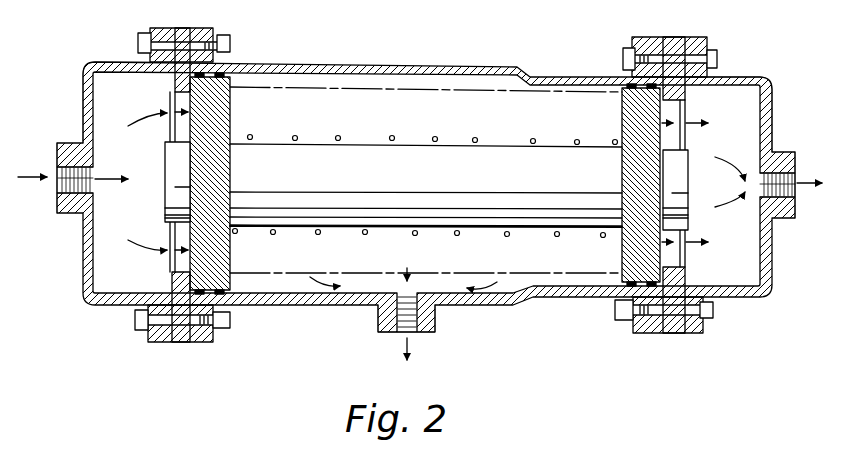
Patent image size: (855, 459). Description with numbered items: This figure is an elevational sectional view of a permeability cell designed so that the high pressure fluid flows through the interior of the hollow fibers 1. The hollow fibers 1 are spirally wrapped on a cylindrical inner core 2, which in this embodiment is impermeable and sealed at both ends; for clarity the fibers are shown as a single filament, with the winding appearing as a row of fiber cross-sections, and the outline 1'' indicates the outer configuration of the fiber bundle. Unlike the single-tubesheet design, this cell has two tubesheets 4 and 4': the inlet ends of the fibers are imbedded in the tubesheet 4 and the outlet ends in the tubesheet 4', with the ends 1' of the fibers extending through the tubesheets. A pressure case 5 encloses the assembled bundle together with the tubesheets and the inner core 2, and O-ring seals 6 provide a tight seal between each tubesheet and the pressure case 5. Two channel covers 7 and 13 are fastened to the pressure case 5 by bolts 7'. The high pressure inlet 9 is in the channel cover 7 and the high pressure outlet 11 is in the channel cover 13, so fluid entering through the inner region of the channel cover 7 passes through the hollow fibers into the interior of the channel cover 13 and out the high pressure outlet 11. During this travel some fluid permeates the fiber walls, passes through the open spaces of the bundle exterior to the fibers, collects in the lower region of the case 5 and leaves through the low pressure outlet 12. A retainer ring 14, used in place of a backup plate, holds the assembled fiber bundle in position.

The hollow fibers 1 is at (425, 187).
The ends of the fibers 1' is at (432, 164).
The outline of the bundle of fibers 1'' is at (426, 180).
The inner core 2 is at (368, 144).
The tubesheet 4 is at (226, 183).
The tubesheet 4' is at (621, 185).
The pressure case 5 is at (404, 70).
The O-ring seals 6 is at (218, 73).
The channel cover 7 is at (116, 81).
The bolts 7' is at (426, 188).
The high pressure inlet 9 is at (58, 188).
The high pressure outlet 11 is at (797, 193).
The low pressure outlet 12 is at (410, 333).
The channel cover 13 is at (745, 77).
The retainer ring 14 is at (178, 83).